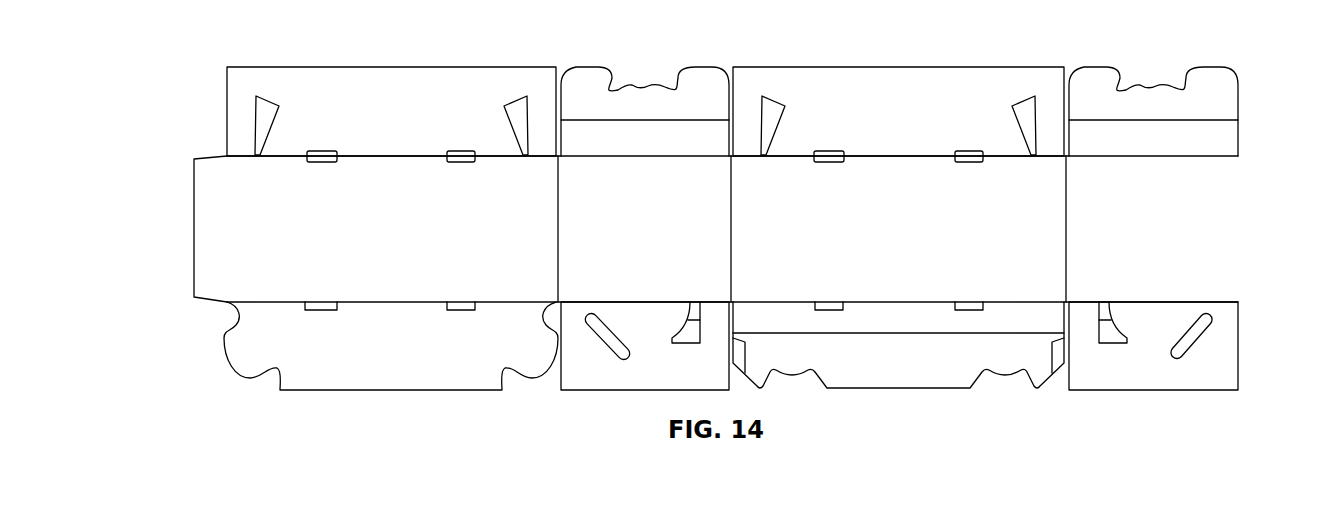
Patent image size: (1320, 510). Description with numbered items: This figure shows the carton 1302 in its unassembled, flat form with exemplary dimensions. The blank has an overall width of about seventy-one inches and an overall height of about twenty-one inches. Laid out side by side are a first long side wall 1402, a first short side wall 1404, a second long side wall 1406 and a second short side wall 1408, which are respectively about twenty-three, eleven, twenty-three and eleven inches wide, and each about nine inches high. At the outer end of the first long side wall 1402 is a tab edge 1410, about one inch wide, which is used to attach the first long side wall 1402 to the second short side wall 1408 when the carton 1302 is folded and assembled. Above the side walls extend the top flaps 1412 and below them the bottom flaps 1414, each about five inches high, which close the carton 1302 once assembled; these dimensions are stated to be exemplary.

The carton 1302 is at (711, 211).
The first long side wall 1402 is at (428, 240).
The first short side wall 1404 is at (678, 240).
The second long side wall 1406 is at (926, 240).
The second short side wall 1408 is at (1184, 219).
The tab edge 1410 is at (214, 293).
The top flaps 1412 is at (1243, 116).
The bottom flaps 1414 is at (1243, 352).